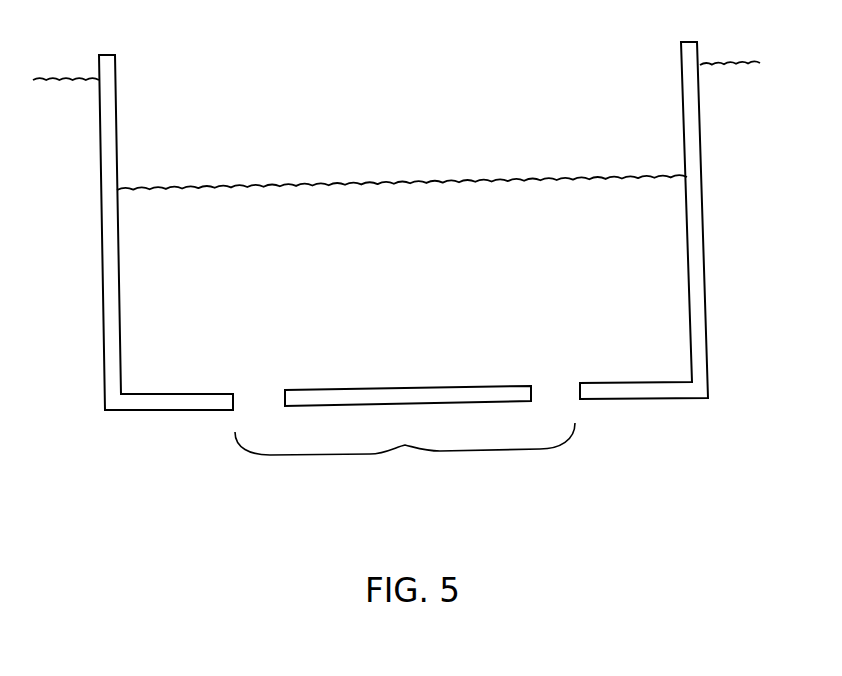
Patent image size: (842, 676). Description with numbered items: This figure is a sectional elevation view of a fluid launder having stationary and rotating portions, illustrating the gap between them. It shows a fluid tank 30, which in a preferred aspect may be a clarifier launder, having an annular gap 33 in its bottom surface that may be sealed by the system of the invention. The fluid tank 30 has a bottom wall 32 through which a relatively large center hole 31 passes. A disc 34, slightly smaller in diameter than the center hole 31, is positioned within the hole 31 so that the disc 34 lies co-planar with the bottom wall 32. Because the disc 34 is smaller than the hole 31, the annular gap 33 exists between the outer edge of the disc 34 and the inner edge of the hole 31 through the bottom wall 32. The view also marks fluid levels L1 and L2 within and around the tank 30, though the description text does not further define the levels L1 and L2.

The fluid tank 30 is at (104, 298).
The center hole 31 is at (405, 452).
The bottom wall 32 is at (649, 391).
The annular gap 33 is at (261, 386).
The disc 34 is at (401, 390).
The upper liquid level L1 is at (45, 79).
The lower liquid level L2 is at (344, 185).